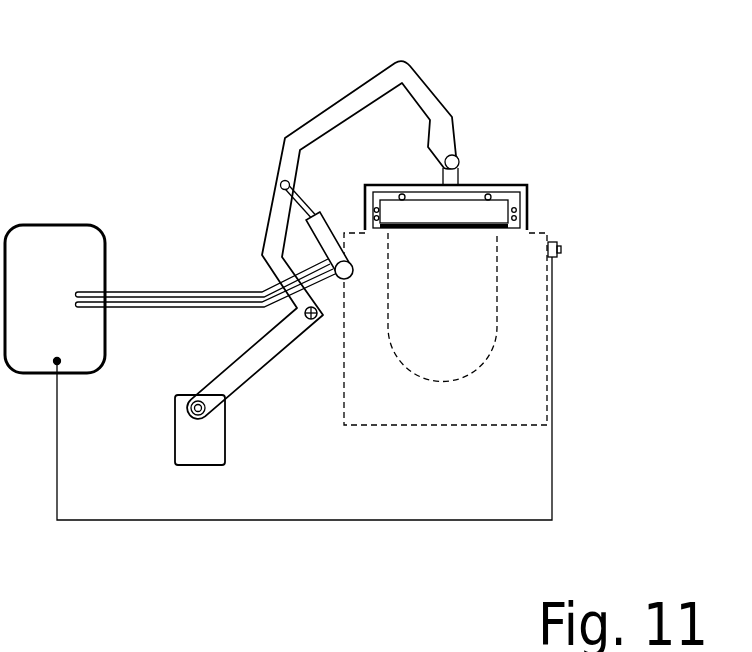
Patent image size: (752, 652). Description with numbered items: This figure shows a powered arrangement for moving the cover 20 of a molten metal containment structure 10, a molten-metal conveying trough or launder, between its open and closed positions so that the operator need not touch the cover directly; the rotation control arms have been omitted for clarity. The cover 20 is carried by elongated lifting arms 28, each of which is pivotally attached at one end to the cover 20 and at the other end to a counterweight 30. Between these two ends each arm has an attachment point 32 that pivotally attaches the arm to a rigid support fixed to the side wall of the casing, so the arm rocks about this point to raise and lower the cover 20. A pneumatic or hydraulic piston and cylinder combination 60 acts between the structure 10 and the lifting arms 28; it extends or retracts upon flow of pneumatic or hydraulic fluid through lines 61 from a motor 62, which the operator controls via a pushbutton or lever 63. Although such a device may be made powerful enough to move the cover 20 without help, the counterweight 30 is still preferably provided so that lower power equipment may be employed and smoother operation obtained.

The molten metal containment structure 10 is at (462, 425).
The cover 20 is at (507, 185).
The lifting arms 28 is at (392, 70).
The counterweight 30 is at (220, 448).
The attachment point 32 is at (317, 320).
The piston and cylinder combination 60 is at (320, 222).
The lines 61 is at (180, 290).
The motor 62 is at (77, 233).
The pushbutton or lever 63 is at (555, 240).